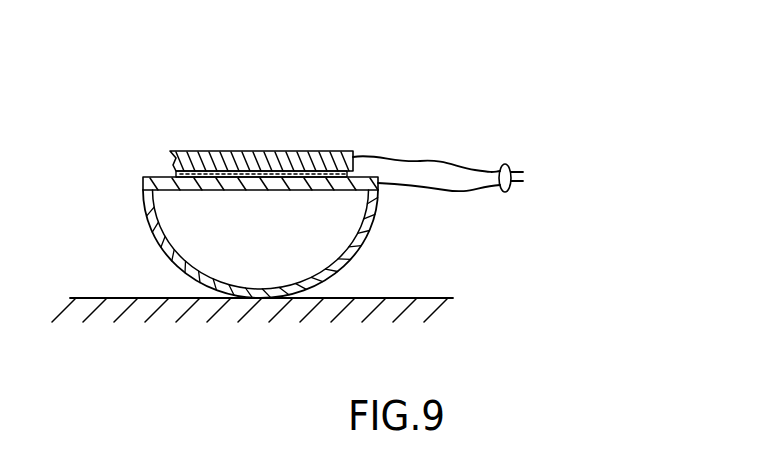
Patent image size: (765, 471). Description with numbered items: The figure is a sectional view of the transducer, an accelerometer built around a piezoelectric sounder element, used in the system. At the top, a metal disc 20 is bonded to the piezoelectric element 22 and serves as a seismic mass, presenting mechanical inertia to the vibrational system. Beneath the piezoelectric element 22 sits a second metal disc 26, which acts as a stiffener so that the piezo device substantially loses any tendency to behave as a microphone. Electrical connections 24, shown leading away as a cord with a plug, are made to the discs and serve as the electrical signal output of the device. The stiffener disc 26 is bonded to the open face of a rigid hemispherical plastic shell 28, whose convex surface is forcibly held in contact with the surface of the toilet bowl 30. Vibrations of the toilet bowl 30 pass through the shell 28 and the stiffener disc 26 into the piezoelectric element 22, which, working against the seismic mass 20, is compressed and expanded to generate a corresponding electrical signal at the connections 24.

The metal disc 20 is at (233, 160).
The piezoelectric element 22 is at (333, 178).
The electrical connections 24 is at (507, 160).
The metal disc stiffener 26 is at (370, 198).
The hemispherical plastic shell 28 is at (353, 247).
The toilet bowl 30 is at (395, 315).